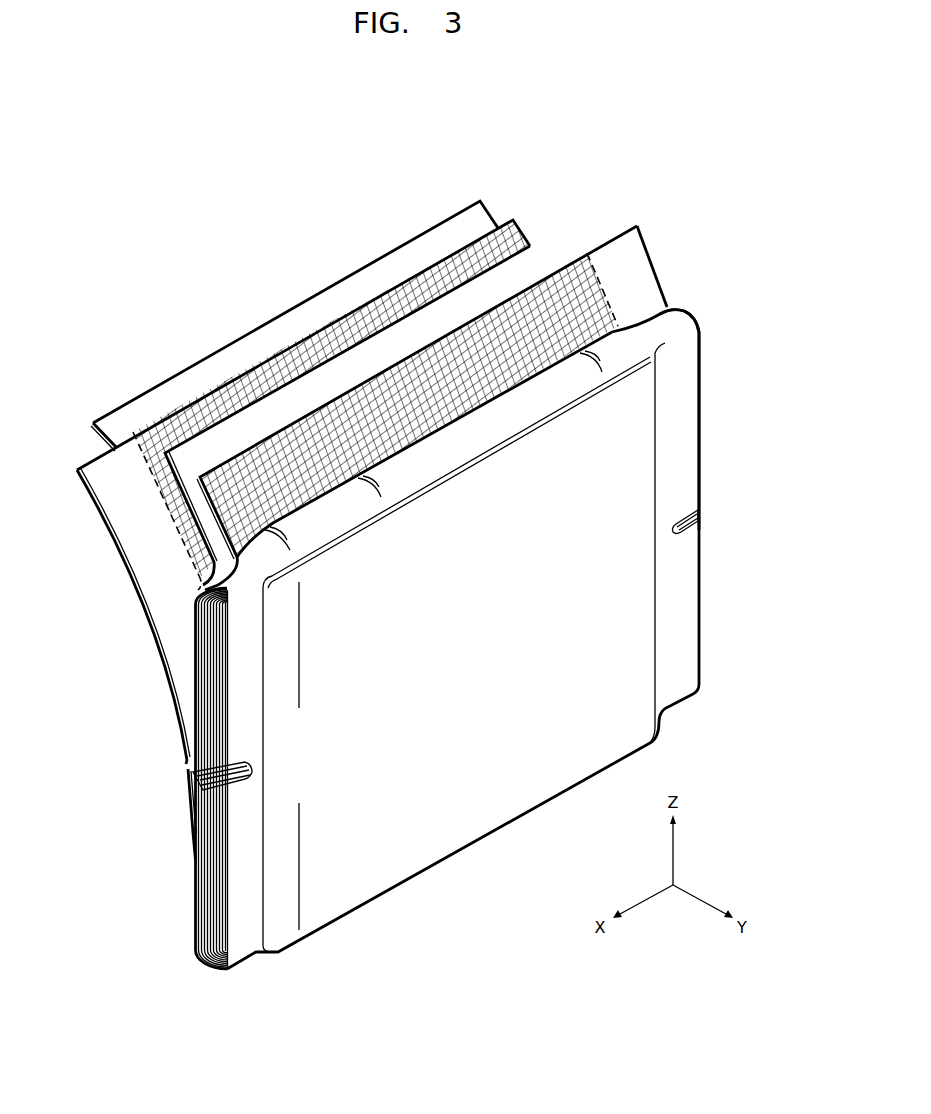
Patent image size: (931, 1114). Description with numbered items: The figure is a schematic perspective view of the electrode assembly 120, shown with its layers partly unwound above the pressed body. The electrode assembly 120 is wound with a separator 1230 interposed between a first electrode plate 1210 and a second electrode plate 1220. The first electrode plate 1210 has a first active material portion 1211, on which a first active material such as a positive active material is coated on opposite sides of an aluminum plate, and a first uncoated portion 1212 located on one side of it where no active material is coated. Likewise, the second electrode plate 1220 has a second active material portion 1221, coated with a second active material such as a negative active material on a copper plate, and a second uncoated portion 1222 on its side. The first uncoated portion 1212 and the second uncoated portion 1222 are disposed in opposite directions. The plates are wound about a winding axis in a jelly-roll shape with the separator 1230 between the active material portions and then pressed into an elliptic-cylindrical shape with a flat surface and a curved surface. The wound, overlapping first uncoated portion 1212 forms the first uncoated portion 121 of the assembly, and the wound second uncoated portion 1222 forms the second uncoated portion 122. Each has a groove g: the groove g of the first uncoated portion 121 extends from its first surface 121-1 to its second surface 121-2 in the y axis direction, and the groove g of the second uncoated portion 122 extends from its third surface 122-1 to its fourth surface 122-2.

The electrode assembly 120 is at (682, 206).
The first uncoated portion of the electrode assembly 121 is at (152, 719).
The first surface of the first uncoated portion 121-1 is at (191, 684).
The second surface of the first uncoated portion 121-2 is at (228, 800).
The second uncoated portion of the electrode assembly 122 is at (722, 474).
The third surface of the second uncoated portion 122-1 is at (667, 306).
The fourth surface of the second uncoated portion 122-2 is at (685, 566).
The first electrode plate 1210 is at (303, 405).
The first active material portion 1211 is at (180, 427).
The first uncoated portion 1212 is at (120, 470).
The second electrode plate 1220 is at (448, 360).
The second active material portion 1221 is at (541, 307).
The second uncoated portion 1222 is at (631, 238).
The separator 1230 is at (443, 308).
The groove g is at (193, 773).